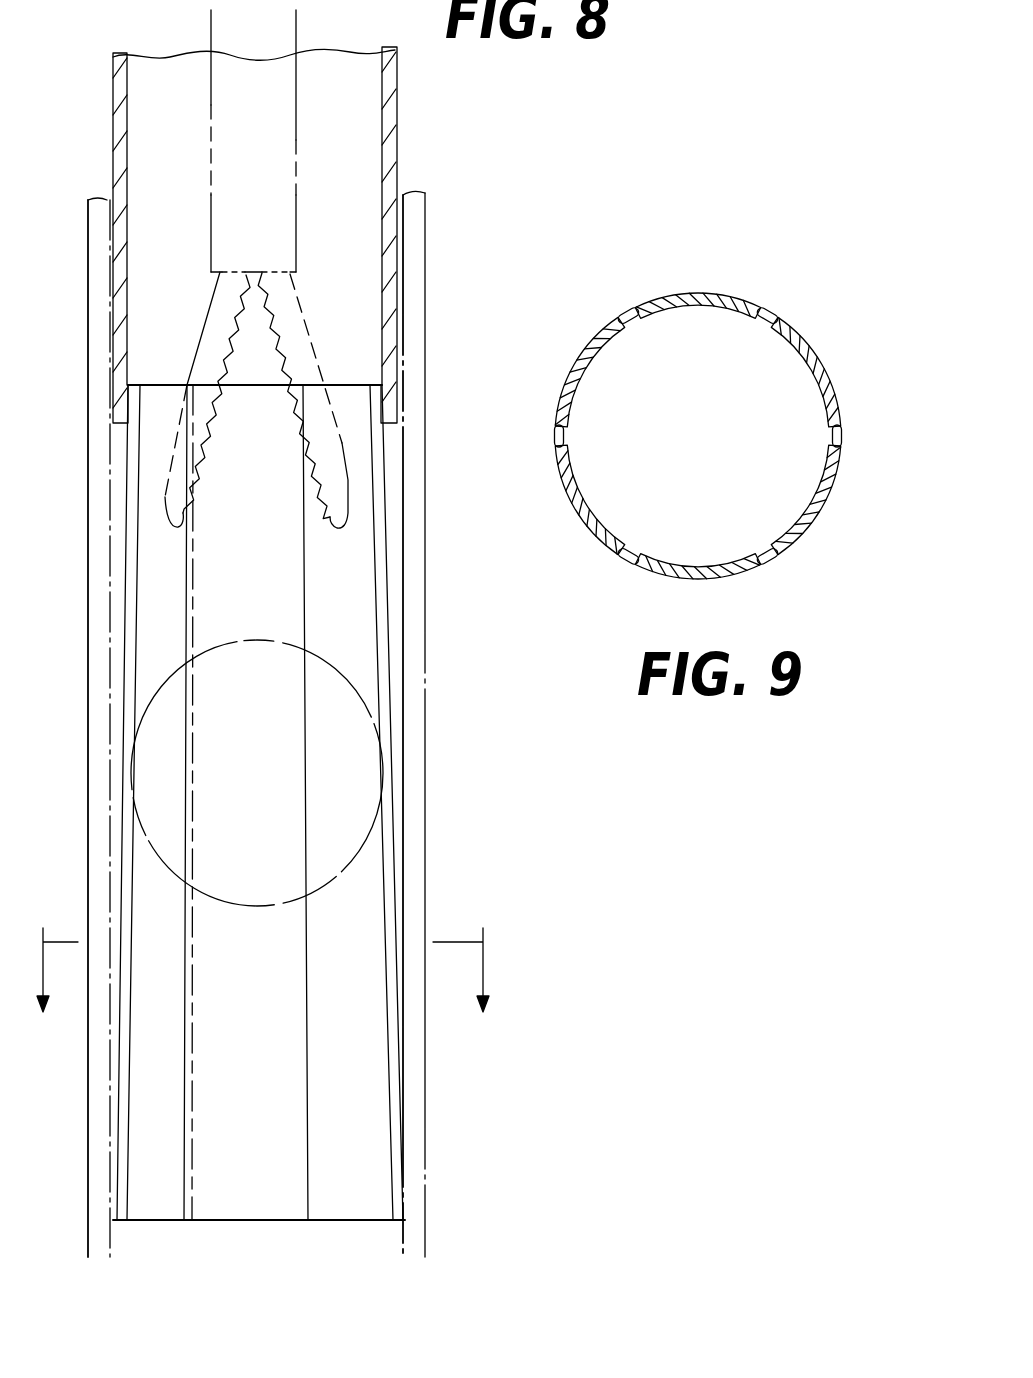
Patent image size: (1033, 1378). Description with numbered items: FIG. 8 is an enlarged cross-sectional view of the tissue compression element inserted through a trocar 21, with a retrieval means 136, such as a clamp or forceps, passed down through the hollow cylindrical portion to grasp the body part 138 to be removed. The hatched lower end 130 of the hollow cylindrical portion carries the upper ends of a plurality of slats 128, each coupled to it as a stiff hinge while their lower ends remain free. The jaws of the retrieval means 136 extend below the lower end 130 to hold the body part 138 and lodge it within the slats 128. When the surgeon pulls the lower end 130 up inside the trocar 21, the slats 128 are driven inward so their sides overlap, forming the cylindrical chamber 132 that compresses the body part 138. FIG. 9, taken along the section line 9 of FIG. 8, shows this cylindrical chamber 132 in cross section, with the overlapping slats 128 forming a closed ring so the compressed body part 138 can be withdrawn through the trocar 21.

In FIG. 8, the trocar 21 is at (427, 569).
In FIG. 8, the lower end of the hollow cylindrical portion 130 is at (358, 383).
In FIG. 8, the retrieval means 136 is at (343, 458).
In FIG. 8, the slats 128 is at (167, 1208).
In FIG. 9, the slats 128 is at (827, 462).
In FIG. 8, the body part 138 is at (353, 748).
In FIG. 8, the section line 9- 9 is at (262, 989).
In FIG. 9, the cylindrical chamber 132 is at (757, 367).